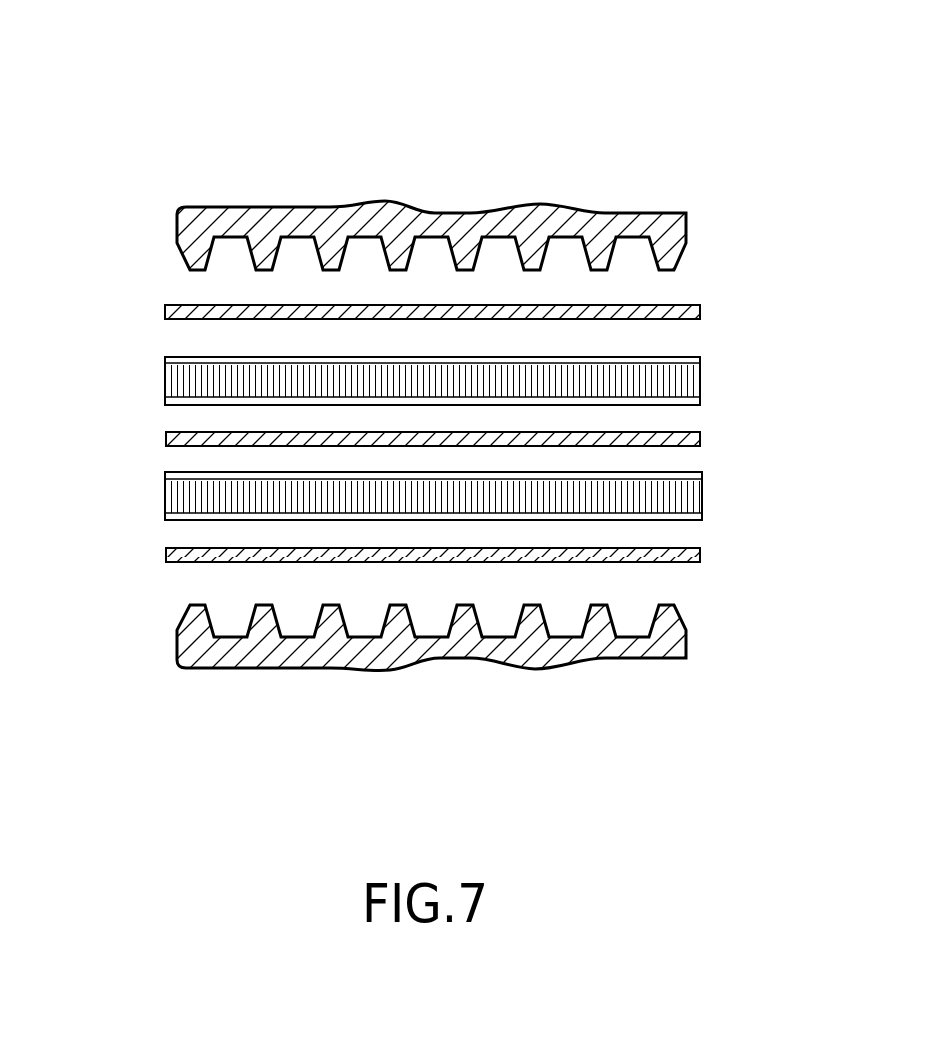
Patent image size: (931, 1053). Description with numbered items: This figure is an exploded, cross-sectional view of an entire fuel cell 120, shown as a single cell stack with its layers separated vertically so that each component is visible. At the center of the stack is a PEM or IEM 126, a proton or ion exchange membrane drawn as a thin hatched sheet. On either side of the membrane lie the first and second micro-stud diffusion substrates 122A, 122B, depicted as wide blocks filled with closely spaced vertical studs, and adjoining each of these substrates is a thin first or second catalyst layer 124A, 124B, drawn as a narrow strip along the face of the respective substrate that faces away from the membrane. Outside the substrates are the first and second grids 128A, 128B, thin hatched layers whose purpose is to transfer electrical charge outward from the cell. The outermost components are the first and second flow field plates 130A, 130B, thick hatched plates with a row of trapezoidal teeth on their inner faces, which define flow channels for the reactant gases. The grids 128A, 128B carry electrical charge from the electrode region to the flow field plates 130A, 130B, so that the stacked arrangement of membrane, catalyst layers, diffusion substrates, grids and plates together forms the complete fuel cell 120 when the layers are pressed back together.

The fuel cell 120 is at (720, 145).
The first micro-stud diffusion substrate 122A is at (703, 372).
The second micro-stud diffusion substrate 122B is at (703, 497).
The first catalyst layer 124A is at (701, 398).
The second catalyst layer 124B is at (702, 475).
The PEM or IEM 126 is at (176, 437).
The first grid 128A is at (701, 312).
The second grid 128B is at (701, 557).
The first flow field plate 130A is at (178, 238).
The second flow field plate 130B is at (178, 652).